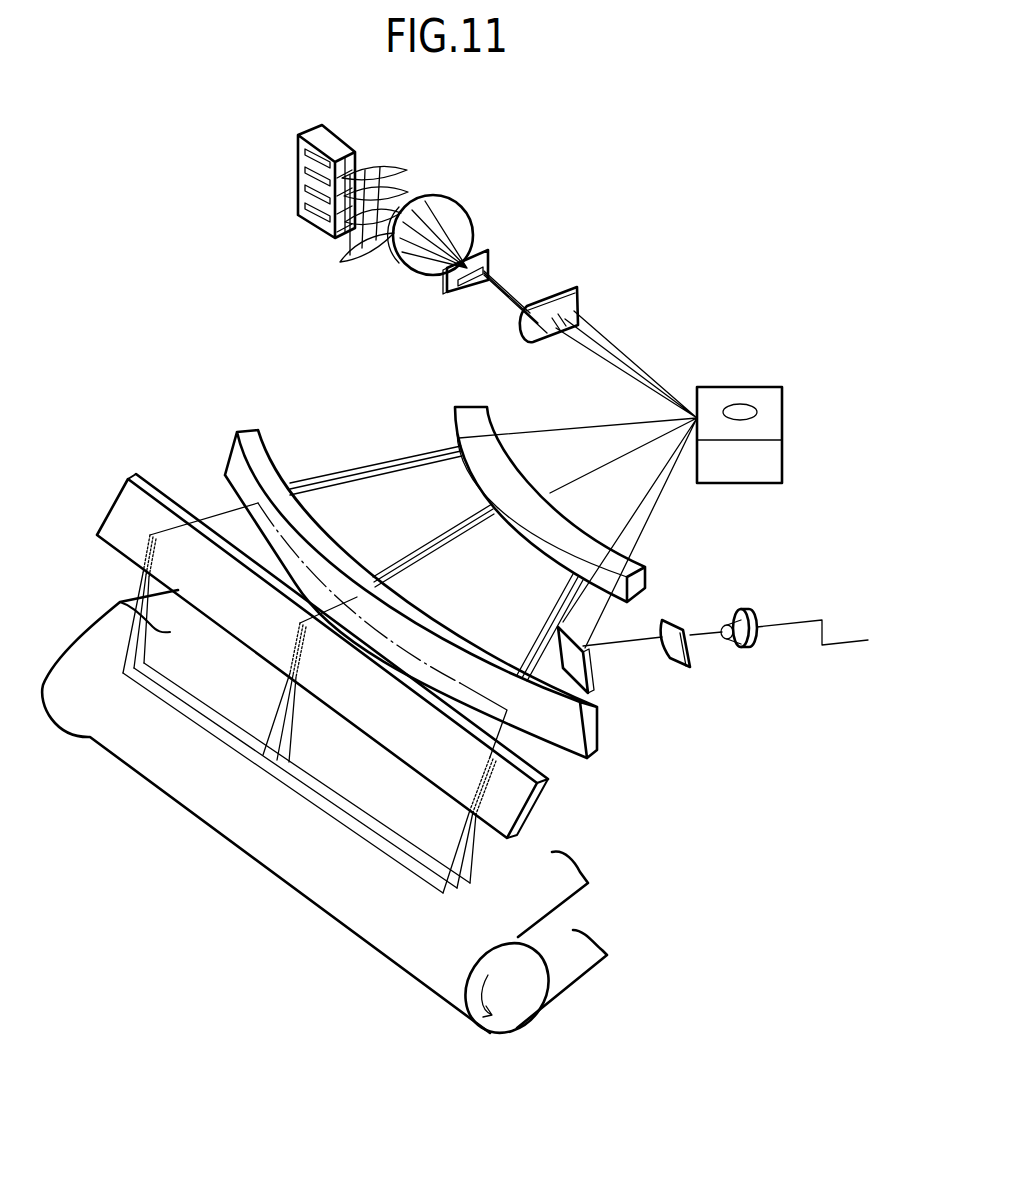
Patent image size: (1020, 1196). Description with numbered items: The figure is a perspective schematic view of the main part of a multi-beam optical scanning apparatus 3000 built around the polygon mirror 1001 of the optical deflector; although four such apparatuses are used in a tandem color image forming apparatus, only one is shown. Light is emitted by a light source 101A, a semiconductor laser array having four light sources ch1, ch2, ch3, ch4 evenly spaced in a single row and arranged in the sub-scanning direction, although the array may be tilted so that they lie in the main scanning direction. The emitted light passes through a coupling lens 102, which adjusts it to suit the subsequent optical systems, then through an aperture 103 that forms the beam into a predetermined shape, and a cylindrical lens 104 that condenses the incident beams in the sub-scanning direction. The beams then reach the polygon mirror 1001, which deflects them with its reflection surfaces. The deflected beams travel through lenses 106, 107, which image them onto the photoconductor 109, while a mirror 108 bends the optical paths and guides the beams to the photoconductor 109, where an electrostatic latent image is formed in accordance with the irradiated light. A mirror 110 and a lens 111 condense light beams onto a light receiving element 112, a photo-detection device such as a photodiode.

The optical scanning apparatus 3000 is at (200, 112).
The light source 101A is at (336, 143).
The light source ch1 is at (300, 160).
The light source ch2 is at (300, 175).
The light source ch3 is at (300, 200).
The light source ch4 is at (318, 217).
The coupling lens 102 is at (463, 222).
The aperture 103 is at (495, 262).
The cylindrical lens 104 is at (568, 307).
The polygon mirror 1001 is at (770, 387).
The lens 106 is at (467, 428).
The lens 107 is at (260, 443).
The mirror 108 is at (158, 498).
The photoconductor 109 is at (550, 900).
The mirror 110 is at (593, 672).
The lens 111 is at (697, 655).
The light receiving element 112 is at (755, 643).